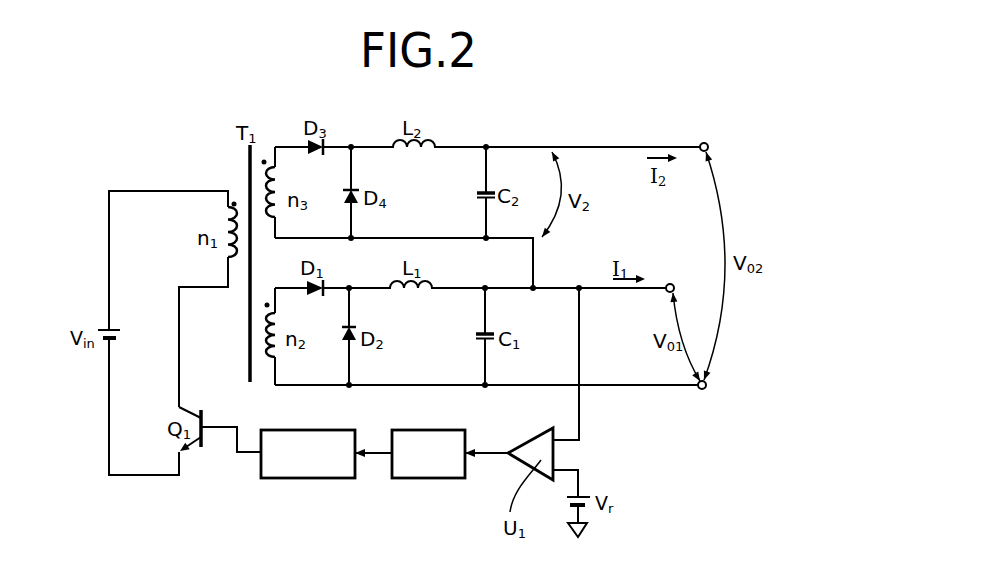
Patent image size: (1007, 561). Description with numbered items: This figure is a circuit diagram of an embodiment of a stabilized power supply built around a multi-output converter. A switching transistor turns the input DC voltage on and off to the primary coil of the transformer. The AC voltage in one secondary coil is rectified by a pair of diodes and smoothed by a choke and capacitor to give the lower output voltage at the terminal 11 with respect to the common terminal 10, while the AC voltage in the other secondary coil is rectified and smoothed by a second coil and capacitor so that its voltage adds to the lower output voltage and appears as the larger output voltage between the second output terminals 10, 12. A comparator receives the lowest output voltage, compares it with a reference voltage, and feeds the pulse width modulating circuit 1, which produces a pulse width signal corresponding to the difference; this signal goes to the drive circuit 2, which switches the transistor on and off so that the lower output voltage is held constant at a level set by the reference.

The pulse width modulating circuit 1 is at (429, 468).
The drive circuit 2 is at (313, 468).
The second output terminal 10 is at (706, 400).
The first output terminal 11 is at (671, 277).
The second output terminal 12 is at (708, 134).